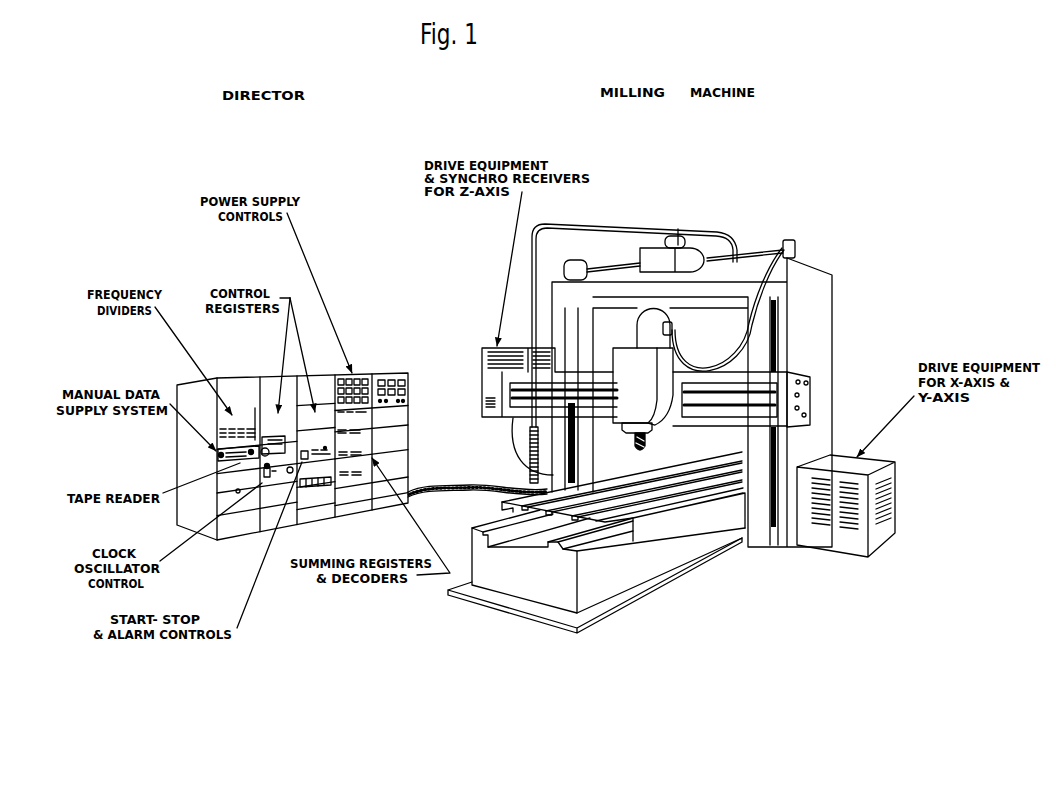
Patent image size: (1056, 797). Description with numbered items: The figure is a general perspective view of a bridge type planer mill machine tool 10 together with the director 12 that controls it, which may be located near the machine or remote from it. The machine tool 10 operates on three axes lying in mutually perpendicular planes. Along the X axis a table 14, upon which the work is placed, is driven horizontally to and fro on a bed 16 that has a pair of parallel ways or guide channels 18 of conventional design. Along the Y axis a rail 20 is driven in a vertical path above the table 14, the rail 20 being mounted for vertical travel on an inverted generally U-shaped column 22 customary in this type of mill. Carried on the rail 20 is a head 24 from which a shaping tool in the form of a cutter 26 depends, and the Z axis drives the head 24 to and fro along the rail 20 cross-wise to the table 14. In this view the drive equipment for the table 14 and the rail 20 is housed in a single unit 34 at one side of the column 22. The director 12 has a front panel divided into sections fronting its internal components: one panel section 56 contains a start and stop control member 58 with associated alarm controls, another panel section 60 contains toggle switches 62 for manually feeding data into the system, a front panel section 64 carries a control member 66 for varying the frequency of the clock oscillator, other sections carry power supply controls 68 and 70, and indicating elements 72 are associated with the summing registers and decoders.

The machine tool 10 is at (668, 218).
The director 12 is at (248, 362).
The table 14 is at (643, 524).
The bed 16 is at (518, 595).
The ways 18 is at (485, 525).
The rail 20 is at (808, 396).
The column 22 is at (822, 305).
The head 24 is at (650, 397).
The cutter 26 is at (647, 440).
The drive equipment unit 34 is at (833, 543).
The panel section 56 is at (325, 447).
The start and stop control member 58 is at (318, 437).
The panel section 60 is at (237, 415).
The toggle switches 62 is at (218, 455).
The front panel section 64 is at (288, 474).
The control member 66 is at (262, 473).
The power supply controls 68 is at (367, 377).
The power supply controls 70 is at (395, 377).
The indicating elements 72 is at (369, 430).